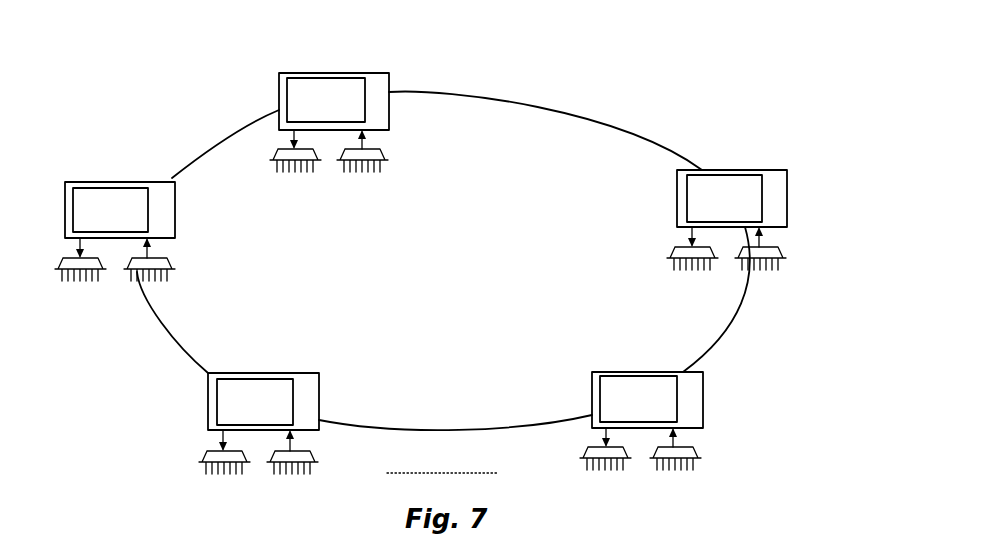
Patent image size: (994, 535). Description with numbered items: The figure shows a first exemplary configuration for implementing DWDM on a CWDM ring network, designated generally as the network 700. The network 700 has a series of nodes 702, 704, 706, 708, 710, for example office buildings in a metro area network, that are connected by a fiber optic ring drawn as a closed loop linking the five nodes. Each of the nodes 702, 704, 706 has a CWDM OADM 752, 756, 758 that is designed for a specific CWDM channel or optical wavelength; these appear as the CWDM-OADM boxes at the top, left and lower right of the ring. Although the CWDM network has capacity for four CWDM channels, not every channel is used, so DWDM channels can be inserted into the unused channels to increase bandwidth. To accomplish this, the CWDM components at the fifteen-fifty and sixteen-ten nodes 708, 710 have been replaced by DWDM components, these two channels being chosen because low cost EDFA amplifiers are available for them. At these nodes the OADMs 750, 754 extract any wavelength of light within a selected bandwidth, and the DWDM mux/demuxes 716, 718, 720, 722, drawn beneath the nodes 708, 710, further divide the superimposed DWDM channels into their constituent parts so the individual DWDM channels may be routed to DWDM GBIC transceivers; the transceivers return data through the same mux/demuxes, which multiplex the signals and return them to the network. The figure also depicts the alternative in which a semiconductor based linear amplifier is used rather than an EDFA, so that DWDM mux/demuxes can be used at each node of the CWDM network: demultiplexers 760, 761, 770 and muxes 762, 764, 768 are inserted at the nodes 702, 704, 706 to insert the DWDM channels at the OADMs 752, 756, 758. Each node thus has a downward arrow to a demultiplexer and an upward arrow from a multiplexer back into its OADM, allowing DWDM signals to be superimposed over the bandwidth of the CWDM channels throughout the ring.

The network 700 is at (655, 52).
The node 702 is at (383, 83).
The node 704 is at (120, 182).
The node 706 is at (703, 410).
The 1550 node 708 is at (252, 373).
The 1610 node 710 is at (753, 170).
The DWDM mux/demux 716 is at (248, 458).
The DWDM mux/demux 718 is at (318, 455).
The DWDM mux/demux 720 is at (668, 253).
The DWDM mux/demux 722 is at (785, 252).
The OADM 750 is at (707, 175).
The OADM 752 is at (627, 376).
The OADM 754 is at (293, 390).
The OADM 756 is at (148, 220).
The OADM 758 is at (365, 110).
The demultiplexer 760 is at (632, 455).
The demultiplexer 761 is at (318, 158).
The mux 762 is at (386, 150).
The mux 764 is at (170, 258).
The mux 768 is at (700, 450).
The demultiplexer 770 is at (105, 265).